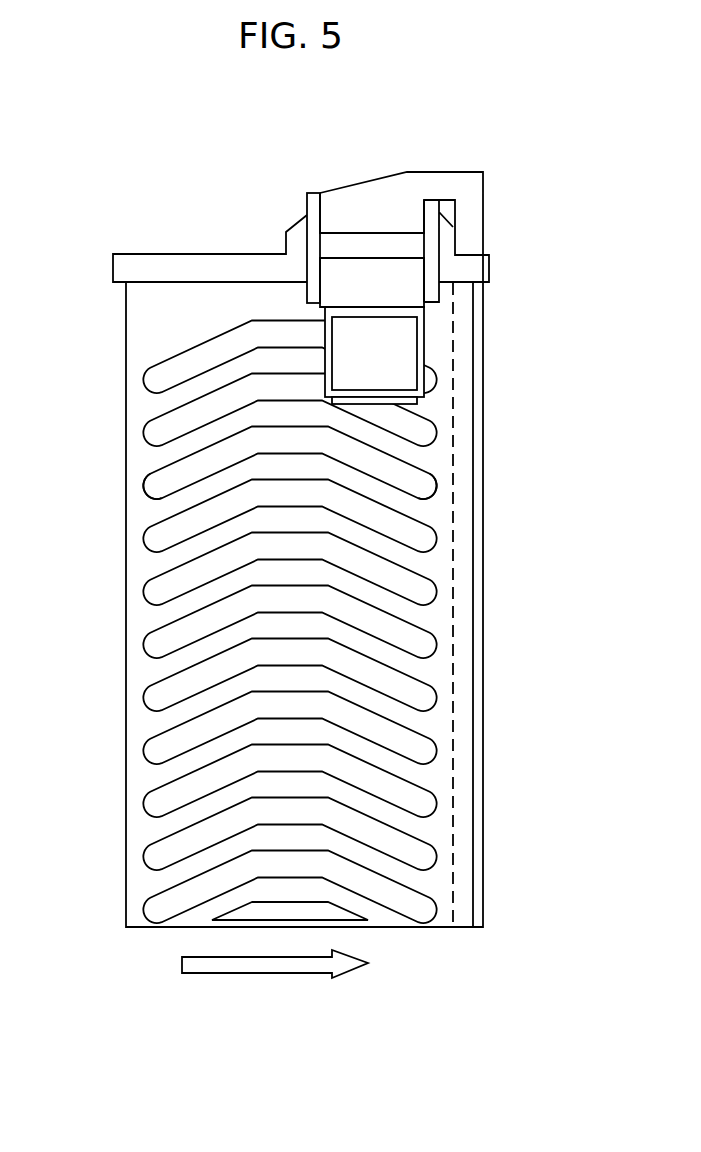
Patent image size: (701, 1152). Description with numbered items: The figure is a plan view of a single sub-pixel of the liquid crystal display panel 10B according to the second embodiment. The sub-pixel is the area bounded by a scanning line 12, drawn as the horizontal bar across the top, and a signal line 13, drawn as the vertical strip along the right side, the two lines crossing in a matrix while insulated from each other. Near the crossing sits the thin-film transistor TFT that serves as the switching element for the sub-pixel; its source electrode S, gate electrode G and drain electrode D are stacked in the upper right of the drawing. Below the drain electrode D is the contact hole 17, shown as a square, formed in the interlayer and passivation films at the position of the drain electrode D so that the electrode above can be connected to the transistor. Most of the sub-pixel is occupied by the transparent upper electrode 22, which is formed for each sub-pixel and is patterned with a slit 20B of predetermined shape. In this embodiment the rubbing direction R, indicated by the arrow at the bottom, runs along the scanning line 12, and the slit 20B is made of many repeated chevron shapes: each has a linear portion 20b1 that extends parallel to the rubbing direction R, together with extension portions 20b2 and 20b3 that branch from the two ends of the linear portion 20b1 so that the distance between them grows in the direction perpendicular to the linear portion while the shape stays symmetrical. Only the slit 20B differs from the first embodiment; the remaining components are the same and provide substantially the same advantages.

The liquid crystal display panel 10B is at (324, 98).
The scanning line 12 is at (189, 265).
The signal line 13 is at (477, 638).
The contact hole 17 is at (407, 353).
The slit 20B is at (412, 796).
The linear portion 20b1 is at (290, 427).
The extension portion 20b2 is at (395, 463).
The extension portion 20b3 is at (185, 483).
The upper electrode 22 is at (435, 837).
The thin-film transistor TFT is at (452, 254).
The source electrode S is at (400, 223).
The gate electrode G is at (400, 250).
The drain electrode D is at (407, 282).
The rubbing direction R is at (288, 965).